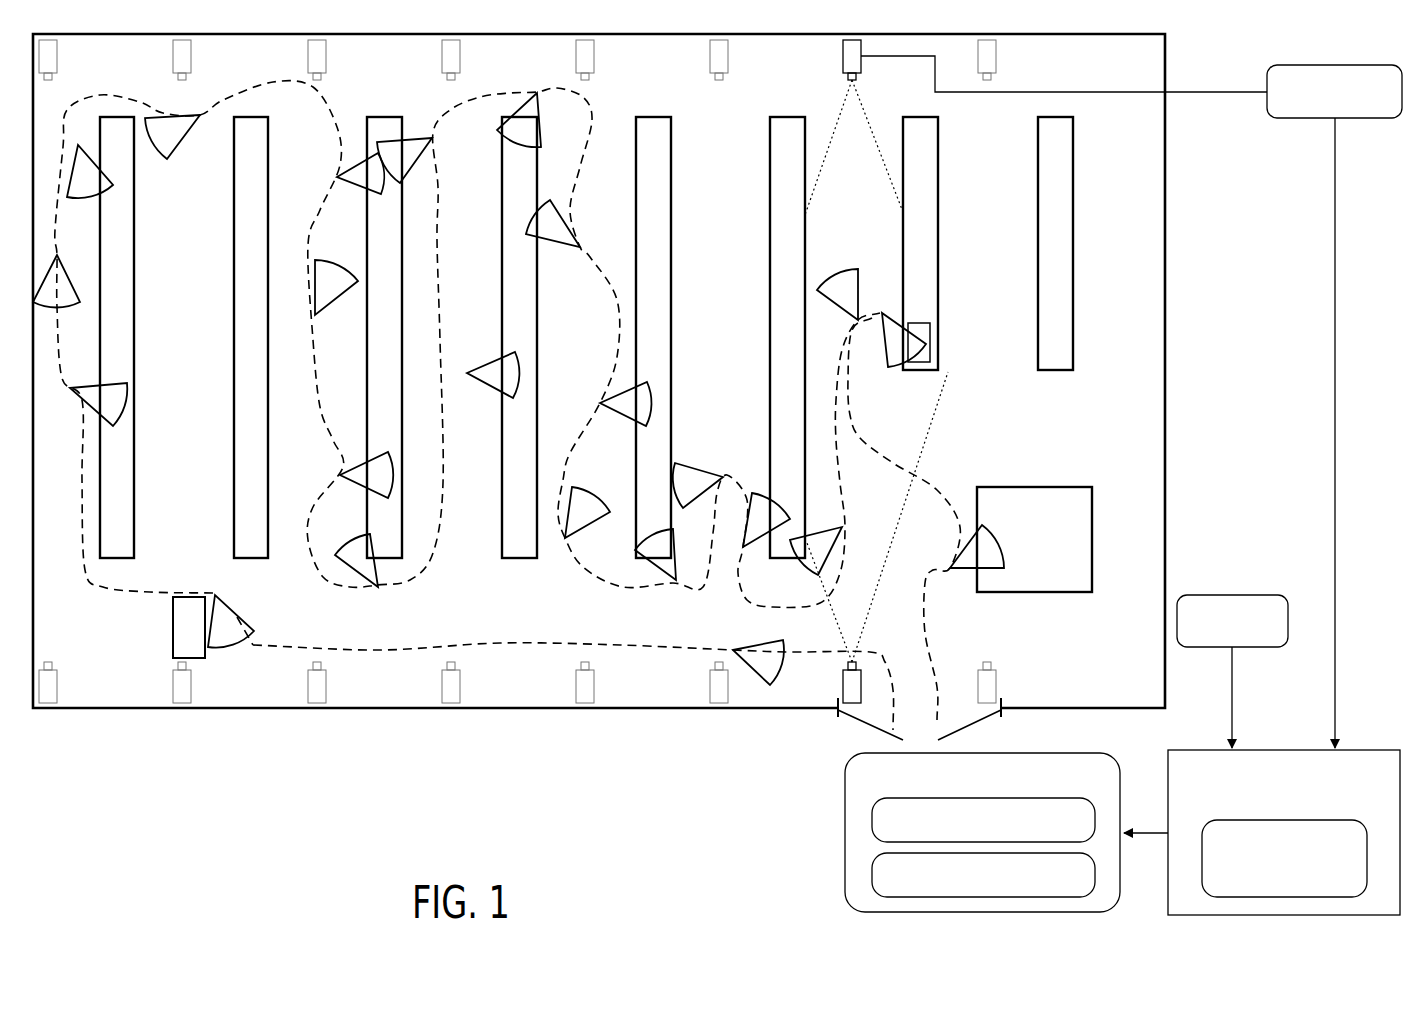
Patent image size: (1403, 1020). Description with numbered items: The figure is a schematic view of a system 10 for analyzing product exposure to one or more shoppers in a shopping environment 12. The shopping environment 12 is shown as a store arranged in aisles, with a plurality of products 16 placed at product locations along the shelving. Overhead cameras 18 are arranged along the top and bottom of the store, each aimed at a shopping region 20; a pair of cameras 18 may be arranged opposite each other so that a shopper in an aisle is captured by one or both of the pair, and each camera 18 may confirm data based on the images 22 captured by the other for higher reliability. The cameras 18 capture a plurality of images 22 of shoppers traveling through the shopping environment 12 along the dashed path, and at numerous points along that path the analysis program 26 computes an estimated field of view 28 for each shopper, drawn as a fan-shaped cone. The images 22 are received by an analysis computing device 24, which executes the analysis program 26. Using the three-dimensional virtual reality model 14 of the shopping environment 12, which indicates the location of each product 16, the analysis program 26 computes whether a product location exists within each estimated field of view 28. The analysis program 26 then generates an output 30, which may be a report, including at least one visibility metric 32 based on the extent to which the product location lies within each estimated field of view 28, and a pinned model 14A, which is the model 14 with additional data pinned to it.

The system 10 is at (717, 474).
The shopping environment 12 is at (1166, 367).
The three-dimensional virtual reality model 14 is at (1232, 671).
The pinned model 14A is at (983, 875).
The products 16 is at (932, 348).
The overhead camera 18 is at (843, 57).
The shopping region 20 is at (854, 155).
The images 22 is at (1131, 402).
The analysis computing device 24 is at (1262, 832).
The analysis program 26 is at (1284, 858).
The estimated field of view 28 is at (858, 268).
The output 30 is at (982, 832).
The visibility metric 32 is at (983, 820).